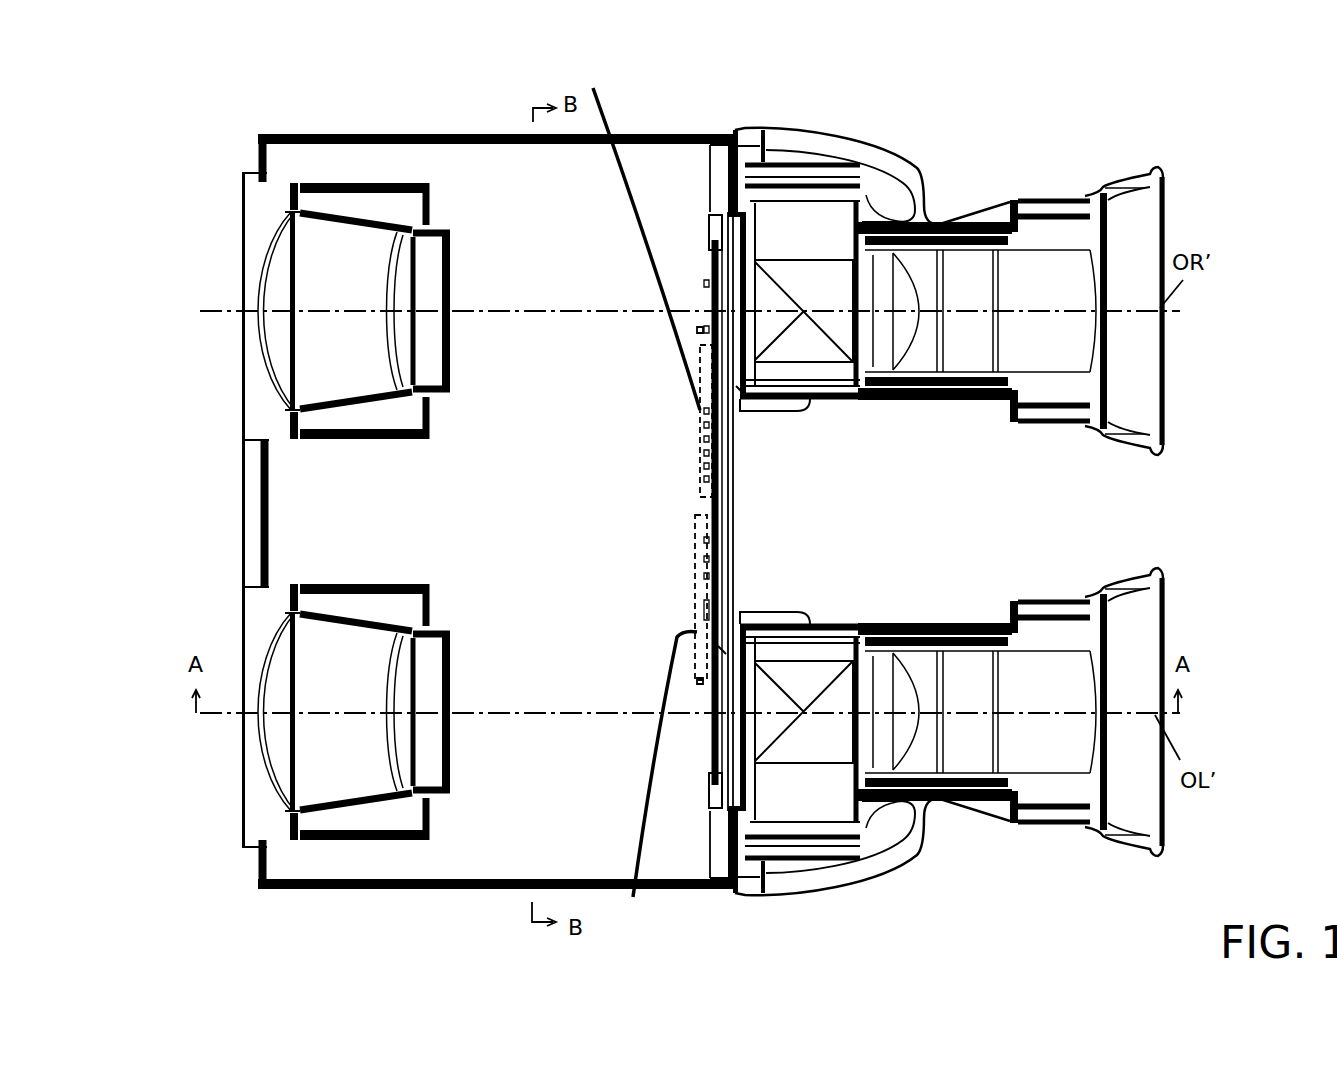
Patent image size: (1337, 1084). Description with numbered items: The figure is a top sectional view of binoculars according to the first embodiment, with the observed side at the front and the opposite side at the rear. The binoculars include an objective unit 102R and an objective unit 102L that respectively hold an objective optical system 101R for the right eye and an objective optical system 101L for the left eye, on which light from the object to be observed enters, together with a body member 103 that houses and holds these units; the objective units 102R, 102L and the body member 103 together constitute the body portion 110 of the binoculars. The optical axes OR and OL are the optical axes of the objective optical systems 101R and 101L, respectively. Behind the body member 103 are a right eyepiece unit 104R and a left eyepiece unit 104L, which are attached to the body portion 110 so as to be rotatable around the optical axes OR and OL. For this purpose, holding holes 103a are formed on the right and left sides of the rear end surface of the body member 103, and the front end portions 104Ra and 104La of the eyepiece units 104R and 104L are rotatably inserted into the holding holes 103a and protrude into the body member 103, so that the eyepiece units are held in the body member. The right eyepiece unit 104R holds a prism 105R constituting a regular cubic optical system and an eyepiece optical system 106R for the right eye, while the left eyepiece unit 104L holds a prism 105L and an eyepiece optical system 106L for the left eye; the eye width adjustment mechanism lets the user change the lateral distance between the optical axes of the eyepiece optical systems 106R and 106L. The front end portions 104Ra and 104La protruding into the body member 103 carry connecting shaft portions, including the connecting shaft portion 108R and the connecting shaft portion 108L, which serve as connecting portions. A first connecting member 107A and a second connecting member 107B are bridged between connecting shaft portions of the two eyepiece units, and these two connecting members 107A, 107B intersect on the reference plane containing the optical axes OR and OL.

The body portion 110 is at (467, 111).
The objective optical system for the right eye 101R is at (278, 280).
The objective optical system for the left eye 101L is at (272, 745).
The objective unit 102R is at (365, 182).
The objective unit 102L is at (365, 838).
The body member 103 is at (515, 880).
The holding hole 103a is at (720, 650).
The right eyepiece unit 104R is at (778, 143).
The left eyepiece unit 104L is at (782, 878).
The front end portion 104Ra is at (715, 236).
The front end portion 104La is at (717, 786).
The prism 105R is at (810, 277).
The prism 105L is at (823, 723).
The eyepiece optical system for the right eye 106R is at (1040, 270).
The eyepiece optical system for the left eye 106L is at (1040, 738).
The first connecting member 107A is at (596, 80).
The second connecting member 107B is at (633, 897).
The connecting shaft portion 108R is at (699, 330).
The connecting shaft portion 108L is at (700, 681).
The optical axis OR is at (220, 310).
The optical axis OL is at (235, 713).